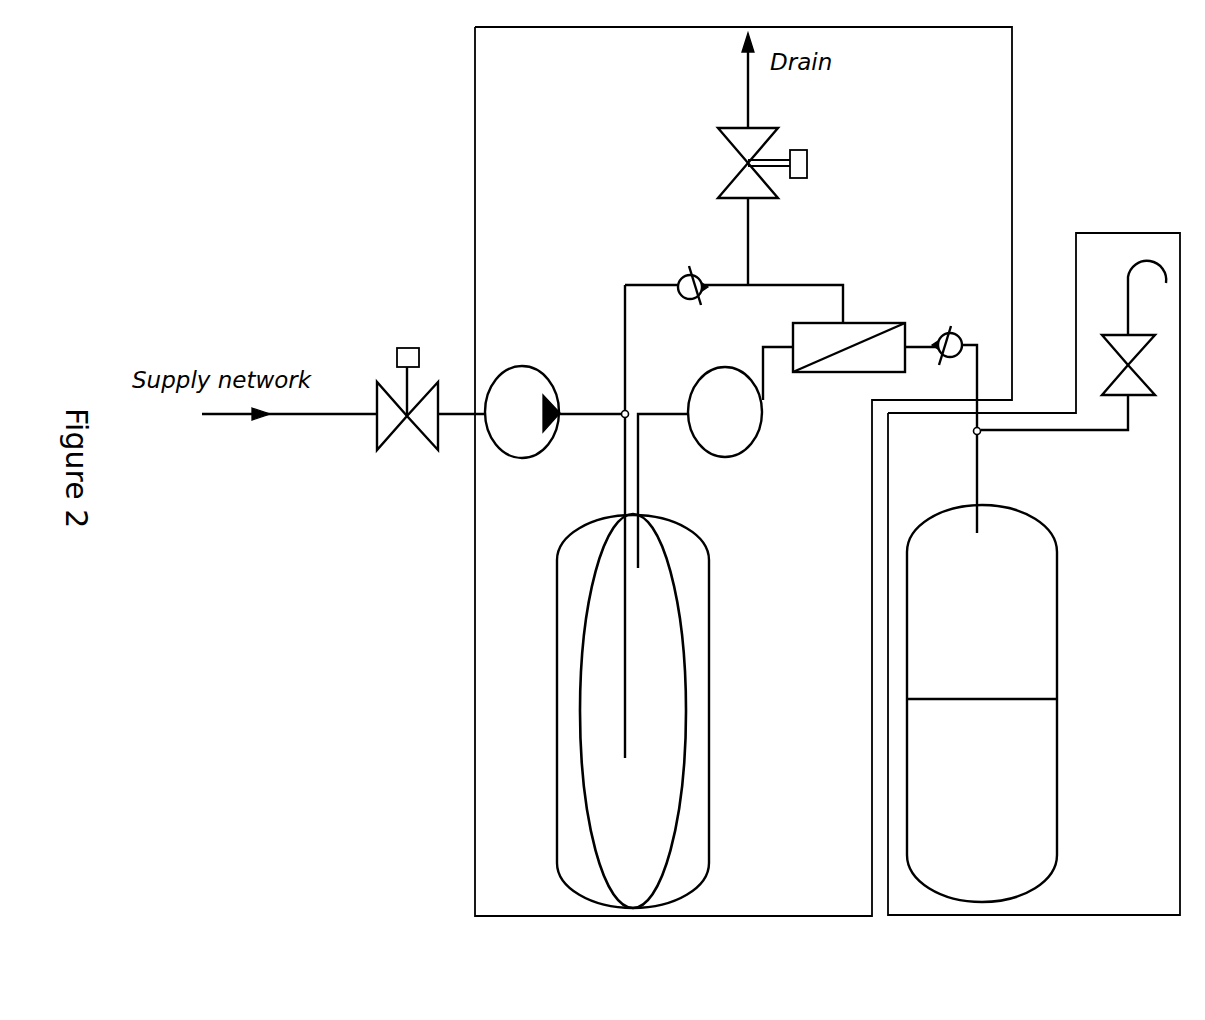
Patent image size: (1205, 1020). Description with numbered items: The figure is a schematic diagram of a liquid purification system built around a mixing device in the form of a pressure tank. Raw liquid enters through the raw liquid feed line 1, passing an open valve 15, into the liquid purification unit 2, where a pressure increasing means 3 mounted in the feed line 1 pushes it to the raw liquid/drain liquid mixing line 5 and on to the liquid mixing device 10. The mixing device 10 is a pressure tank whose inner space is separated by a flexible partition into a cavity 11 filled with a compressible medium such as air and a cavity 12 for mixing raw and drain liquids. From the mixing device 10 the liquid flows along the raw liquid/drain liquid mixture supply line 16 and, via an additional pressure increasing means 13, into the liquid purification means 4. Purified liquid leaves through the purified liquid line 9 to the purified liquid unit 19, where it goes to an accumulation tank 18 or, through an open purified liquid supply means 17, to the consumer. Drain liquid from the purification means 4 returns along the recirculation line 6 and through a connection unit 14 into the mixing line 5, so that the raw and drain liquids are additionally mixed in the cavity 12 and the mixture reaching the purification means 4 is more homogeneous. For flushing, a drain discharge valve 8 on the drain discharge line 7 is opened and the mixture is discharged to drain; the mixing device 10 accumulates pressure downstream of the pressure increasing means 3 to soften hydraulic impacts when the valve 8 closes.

The raw liquid feed line 1 is at (620, 418).
The liquid purification unit 2 is at (743, 471).
The pressure increasing means 3 is at (528, 388).
The liquid purification means 4 is at (870, 358).
The raw liquid/drain liquid mixing line 5 is at (623, 465).
The recirculation line 6 is at (647, 285).
The drain discharge line 7 is at (748, 63).
The drain discharge valve 8 is at (752, 142).
The purified liquid line 9 is at (970, 342).
The liquid mixing device 10 is at (710, 855).
The cavity filled with compressible medium 11 is at (693, 702).
The cavity for mixing raw and drain liquids 12 is at (655, 580).
The additional pressure increasing means 13 is at (740, 415).
The connection unit 14 is at (628, 412).
The valve 15 is at (390, 410).
The raw liquid/drain liquid mixture supply line 16 is at (670, 418).
The purified liquid supply means 17 is at (1127, 348).
The accumulation tank 18 is at (1022, 587).
The purified liquid unit 19 is at (1034, 574).